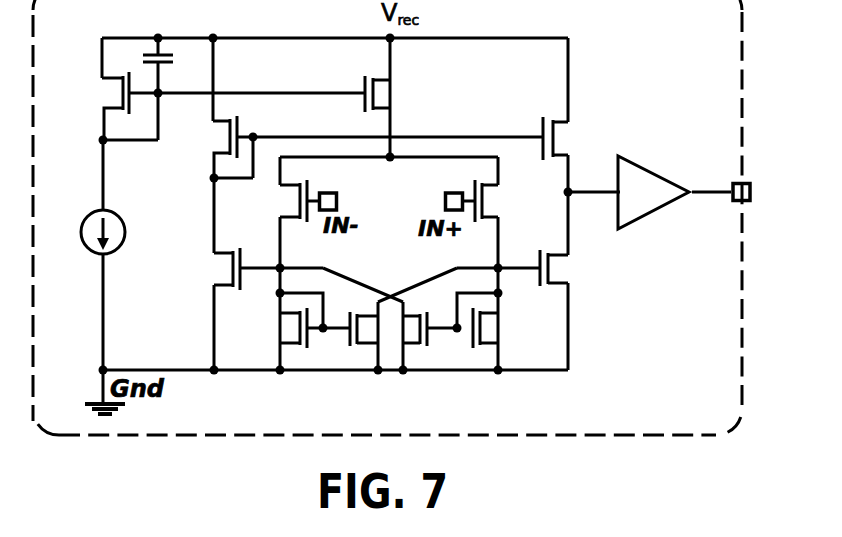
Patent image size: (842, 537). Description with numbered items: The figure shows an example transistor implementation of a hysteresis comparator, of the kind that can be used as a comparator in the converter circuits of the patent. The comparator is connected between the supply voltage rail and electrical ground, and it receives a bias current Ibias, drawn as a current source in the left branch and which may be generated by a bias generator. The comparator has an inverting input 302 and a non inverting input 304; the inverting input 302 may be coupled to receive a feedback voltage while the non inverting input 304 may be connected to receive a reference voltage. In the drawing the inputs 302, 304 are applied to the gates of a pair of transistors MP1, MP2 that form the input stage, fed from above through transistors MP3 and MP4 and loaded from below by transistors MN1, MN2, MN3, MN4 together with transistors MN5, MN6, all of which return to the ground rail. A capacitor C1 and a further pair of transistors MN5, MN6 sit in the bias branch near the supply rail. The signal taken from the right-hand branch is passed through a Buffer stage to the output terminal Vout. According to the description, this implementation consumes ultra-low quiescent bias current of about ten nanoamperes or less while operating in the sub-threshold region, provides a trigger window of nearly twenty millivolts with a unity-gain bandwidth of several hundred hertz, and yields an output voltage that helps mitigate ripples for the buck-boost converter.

The inverting input 302 is at (320, 193).
The non inverting input 304 is at (463, 193).
The NMOS transistor MN1 is at (266, 328).
The NMOS transistor MN2 is at (515, 328).
The NMOS transistor MN3 is at (349, 344).
The NMOS transistor MN4 is at (440, 344).
The NMOS transistor MN5 is at (302, 184).
The NMOS transistor MN6 is at (337, 183).
The PMOS transistor MP1 is at (266, 201).
The PMOS transistor MP2 is at (513, 201).
The PMOS transistor MP3 is at (202, 147).
The PMOS transistor MP4 is at (584, 138).
The capacitor C1 is at (174, 62).
The bias current Ibias is at (84, 240).
The output buffer Buffer is at (663, 205).
The output terminal Vout is at (765, 193).